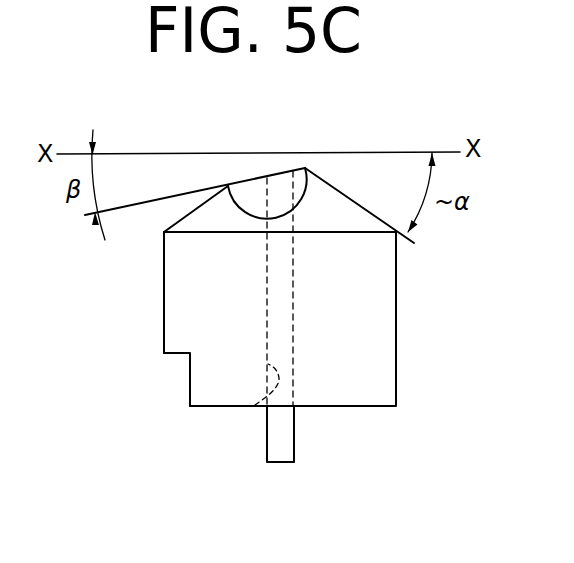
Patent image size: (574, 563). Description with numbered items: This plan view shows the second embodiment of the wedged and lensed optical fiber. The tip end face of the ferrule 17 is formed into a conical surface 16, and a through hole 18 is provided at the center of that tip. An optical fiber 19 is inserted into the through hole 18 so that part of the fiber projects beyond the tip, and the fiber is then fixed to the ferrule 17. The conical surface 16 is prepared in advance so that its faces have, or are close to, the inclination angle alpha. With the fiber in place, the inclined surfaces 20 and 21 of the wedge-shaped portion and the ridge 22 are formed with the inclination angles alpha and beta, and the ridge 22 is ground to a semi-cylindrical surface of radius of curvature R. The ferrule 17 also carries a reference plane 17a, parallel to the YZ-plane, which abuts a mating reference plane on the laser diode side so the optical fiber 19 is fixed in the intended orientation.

The conical surface 16 is at (178, 223).
The ferrule 17 is at (375, 338).
The reference plane 17a is at (190, 375).
The through hole 18 is at (255, 405).
The optical fiber 19 is at (285, 440).
The inclined surface 20 is at (298, 176).
The inclined surface 21 is at (280, 288).
The ridge 22 is at (250, 180).